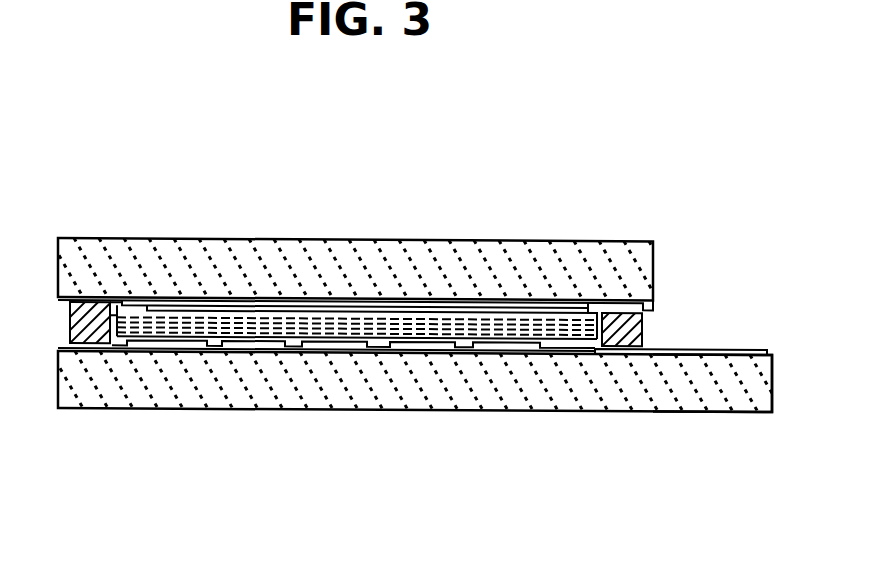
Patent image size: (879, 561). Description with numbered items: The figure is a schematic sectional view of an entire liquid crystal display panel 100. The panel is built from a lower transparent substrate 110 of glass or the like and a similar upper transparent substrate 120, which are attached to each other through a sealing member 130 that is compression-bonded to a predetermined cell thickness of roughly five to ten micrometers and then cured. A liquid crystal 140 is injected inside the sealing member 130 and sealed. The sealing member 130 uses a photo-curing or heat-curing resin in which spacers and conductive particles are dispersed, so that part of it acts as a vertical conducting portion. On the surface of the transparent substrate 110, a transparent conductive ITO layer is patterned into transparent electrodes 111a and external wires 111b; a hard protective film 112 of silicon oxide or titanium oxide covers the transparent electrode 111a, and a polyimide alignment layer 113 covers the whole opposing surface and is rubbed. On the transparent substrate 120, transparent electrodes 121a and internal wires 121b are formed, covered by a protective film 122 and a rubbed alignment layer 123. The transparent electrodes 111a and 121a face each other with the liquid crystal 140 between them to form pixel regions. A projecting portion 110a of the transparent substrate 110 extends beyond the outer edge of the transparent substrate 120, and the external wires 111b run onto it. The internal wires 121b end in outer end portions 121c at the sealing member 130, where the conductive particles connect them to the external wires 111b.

The liquid crystal display panel 100 is at (370, 117).
The transparent substrate 110 is at (367, 395).
The projecting portion 110a is at (693, 397).
The transparent electrodes 111a is at (170, 348).
The external wires 111b is at (633, 355).
The protective film 112 is at (462, 352).
The alignment layer 113 is at (298, 348).
The transparent substrate 120 is at (155, 250).
The transparent electrodes 121a is at (372, 295).
The internal wires 121b is at (575, 297).
The outer end portions 121c is at (630, 297).
The protective film 122 is at (455, 300).
The alignment layer 123 is at (270, 312).
The sealing member 130 is at (68, 328).
The liquid crystal 140 is at (145, 325).